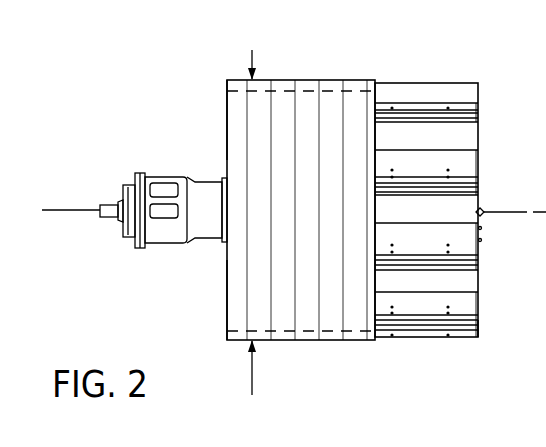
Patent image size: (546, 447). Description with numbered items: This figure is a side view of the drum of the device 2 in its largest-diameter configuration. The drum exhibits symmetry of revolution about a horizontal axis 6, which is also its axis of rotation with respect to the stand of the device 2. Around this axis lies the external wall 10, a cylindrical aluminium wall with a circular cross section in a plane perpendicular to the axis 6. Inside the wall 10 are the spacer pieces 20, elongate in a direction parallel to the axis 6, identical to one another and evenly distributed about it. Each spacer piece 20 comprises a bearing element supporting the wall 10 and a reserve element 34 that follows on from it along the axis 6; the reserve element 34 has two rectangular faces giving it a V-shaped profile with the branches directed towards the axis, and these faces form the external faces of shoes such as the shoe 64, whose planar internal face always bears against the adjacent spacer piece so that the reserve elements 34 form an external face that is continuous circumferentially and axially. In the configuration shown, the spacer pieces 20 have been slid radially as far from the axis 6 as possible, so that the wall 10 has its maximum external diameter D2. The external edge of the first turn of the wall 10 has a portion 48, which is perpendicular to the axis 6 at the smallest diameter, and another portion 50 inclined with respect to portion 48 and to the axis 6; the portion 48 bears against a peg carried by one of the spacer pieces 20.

The device 2 is at (196, 79).
The external wall 10 is at (302, 80).
The reserve element 34 is at (405, 82).
The spacer piece 20 is at (452, 95).
The horizontal axis 6 is at (70, 210).
The portion of external edge 48 is at (226, 134).
The portion of external edge 50 is at (232, 314).
The shoe 64 is at (512, 383).
The maximum external diameter D2 is at (235, 221).